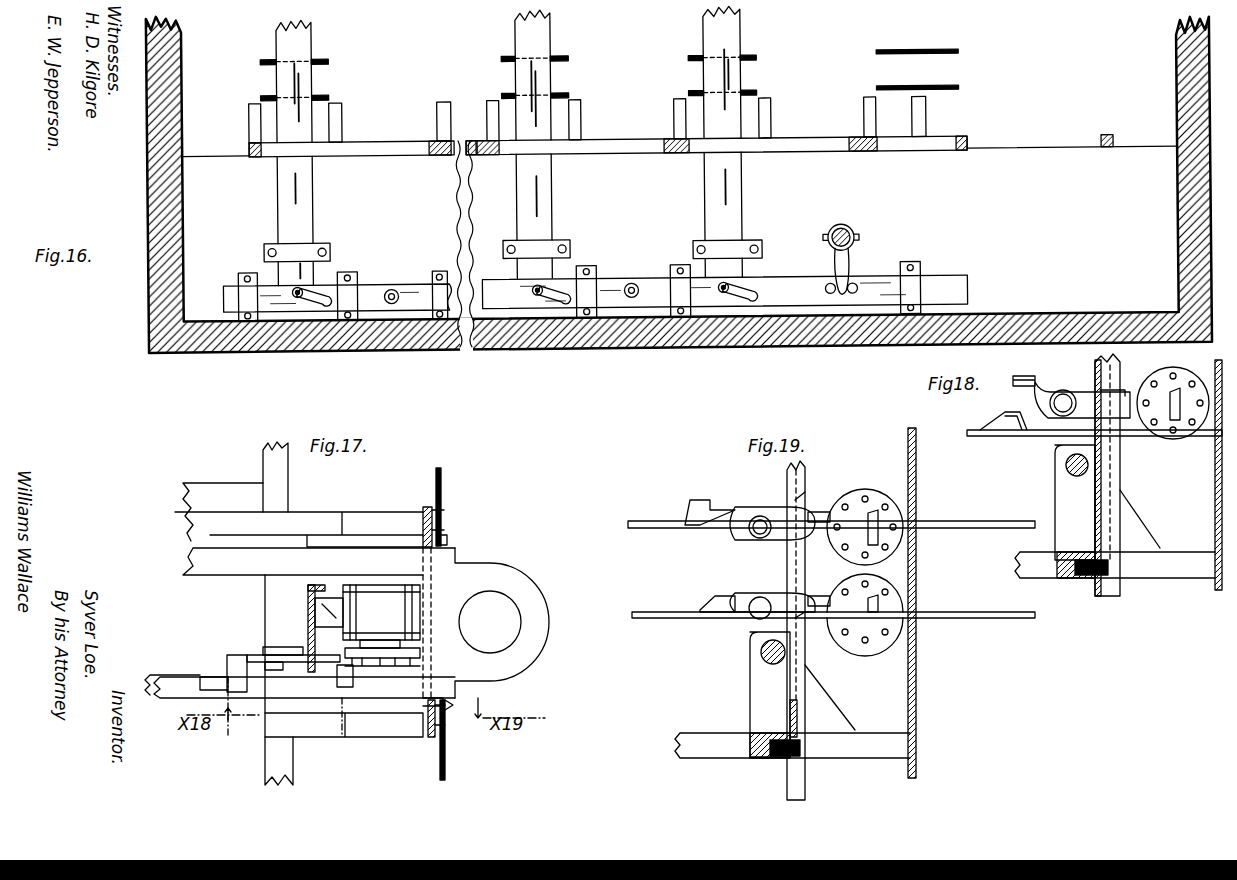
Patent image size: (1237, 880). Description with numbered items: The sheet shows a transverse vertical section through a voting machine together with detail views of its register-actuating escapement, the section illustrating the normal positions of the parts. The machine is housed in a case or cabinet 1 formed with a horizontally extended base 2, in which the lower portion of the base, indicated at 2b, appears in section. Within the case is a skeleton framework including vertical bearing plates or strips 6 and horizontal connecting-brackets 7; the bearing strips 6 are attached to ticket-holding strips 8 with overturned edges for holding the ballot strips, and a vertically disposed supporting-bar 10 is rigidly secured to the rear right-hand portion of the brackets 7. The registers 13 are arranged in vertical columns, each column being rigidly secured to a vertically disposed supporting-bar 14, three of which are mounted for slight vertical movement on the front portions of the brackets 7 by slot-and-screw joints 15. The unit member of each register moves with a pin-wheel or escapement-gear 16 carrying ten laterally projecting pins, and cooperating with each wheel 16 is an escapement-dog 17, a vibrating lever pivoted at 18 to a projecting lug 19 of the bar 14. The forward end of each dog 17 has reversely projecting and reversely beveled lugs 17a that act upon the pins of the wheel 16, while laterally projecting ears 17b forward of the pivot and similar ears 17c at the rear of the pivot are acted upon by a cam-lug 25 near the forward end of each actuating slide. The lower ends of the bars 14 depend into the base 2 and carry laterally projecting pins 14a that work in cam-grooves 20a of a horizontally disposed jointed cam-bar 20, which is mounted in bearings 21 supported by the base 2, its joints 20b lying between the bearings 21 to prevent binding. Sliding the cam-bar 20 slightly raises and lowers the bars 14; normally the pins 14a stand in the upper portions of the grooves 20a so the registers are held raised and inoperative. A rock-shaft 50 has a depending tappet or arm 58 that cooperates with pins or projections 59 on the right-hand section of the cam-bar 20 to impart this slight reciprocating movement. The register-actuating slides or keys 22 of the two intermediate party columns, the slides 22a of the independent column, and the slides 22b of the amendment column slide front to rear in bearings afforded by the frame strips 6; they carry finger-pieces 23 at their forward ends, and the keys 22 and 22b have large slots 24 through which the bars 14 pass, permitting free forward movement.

In FIG. 16, the case or cabinet 1 is at (176, 56).
In FIG. 16, the base 2 is at (150, 347).
In FIG. 16, the bottom portion 2b is at (196, 276).
In FIG. 17, the vertical bearing plates or strips 6 is at (423, 509).
In FIG. 19, the vertical bearing plates or strips 6 is at (922, 693).
In FIG. 18, the vertical bearing plates or strips 6 is at (1215, 473).
In FIG. 16, the horizontal connecting-brackets 7 is at (382, 147).
In FIG. 17, the horizontal connecting-brackets 7 is at (357, 520).
In FIG. 19, the horizontal connecting-brackets 7 is at (858, 737).
In FIG. 18, the horizontal connecting-brackets 7 is at (1162, 562).
In FIG. 17, the ticket-holding strips 8 is at (447, 503).
In FIG. 17, the supporting-bar 10 is at (420, 653).
In FIG. 17, the registers 13 is at (367, 616).
In FIG. 16, the supporting-bar 14 is at (313, 192).
In FIG. 17, the supporting-bar 14 is at (307, 599).
In FIG. 19, the supporting-bar 14 is at (806, 790).
In FIG. 18, the supporting-bar 14 is at (1103, 493).
In FIG. 16, the laterally-projecting pins 14a is at (297, 294).
In FIG. 19, the slot-and-screw joints 15 is at (786, 760).
In FIG. 18, the slot-and-screw joints 15 is at (1088, 578).
In FIG. 19, the pin-wheel or escapement-gear 16 is at (882, 548).
In FIG. 18, the pin-wheel or escapement-gear 16 is at (1180, 376).
In FIG. 17, the escapement-dog 17 is at (249, 655).
In FIG. 19, the escapement-dog 17 is at (748, 506).
In FIG. 18, the escapement-dog 17 is at (1110, 396).
In FIG. 17, the reversely-projecting and reversely-beveled lugs 17a is at (378, 722).
In FIG. 19, the reversely-projecting and reversely-beveled lugs 17a is at (878, 533).
In FIG. 18, the reversely-projecting and reversely-beveled lugs 17a is at (1166, 437).
In FIG. 17, the laterally-projecting ears 17b is at (340, 700).
In FIG. 19, the laterally-projecting ears 17b is at (818, 527).
In FIG. 17, the ears 17c is at (244, 692).
In FIG. 19, the ears 17c is at (722, 528).
In FIG. 18, the ears 17c is at (1035, 375).
In FIG. 17, the pivot 18 is at (285, 679).
In FIG. 19, the pivot 18 is at (762, 538).
In FIG. 18, the pivot 18 is at (1060, 417).
In FIG. 17, the projecting lug 19 is at (300, 647).
In FIG. 19, the projecting lug 19 is at (803, 505).
In FIG. 18, the projecting lug 19 is at (1089, 382).
In FIG. 16, the jointed cam-bar 20 is at (412, 287).
In FIG. 16, the cam-grooves 20a is at (324, 293).
In FIG. 16, the joints 20b is at (393, 301).
In FIG. 16, the bearings 21 is at (243, 268).
In FIG. 16, the register-actuating slides or keys 22 is at (688, 93).
In FIG. 17, the register-actuating slides or keys 22 is at (304, 623).
In FIG. 19, the register-actuating slides or keys 22 is at (662, 535).
In FIG. 18, the register-actuating slides or keys 22 is at (1094, 458).
In FIG. 16, the slides 22a is at (960, 91).
In FIG. 16, the slides 22b is at (321, 93).
In FIG. 17, the finger-pieces 23 is at (520, 590).
In FIG. 17, the slots 24 is at (234, 587).
In FIG. 17, the cam-lug 25 is at (210, 677).
In FIG. 19, the cam-lug 25 is at (684, 509).
In FIG. 18, the cam-lug 25 is at (993, 427).
In FIG. 16, the rock-shaft 50 is at (849, 230).
In FIG. 16, the depending tappet or arm 58 is at (856, 260).
In FIG. 16, the pins or projections 59 is at (845, 306).